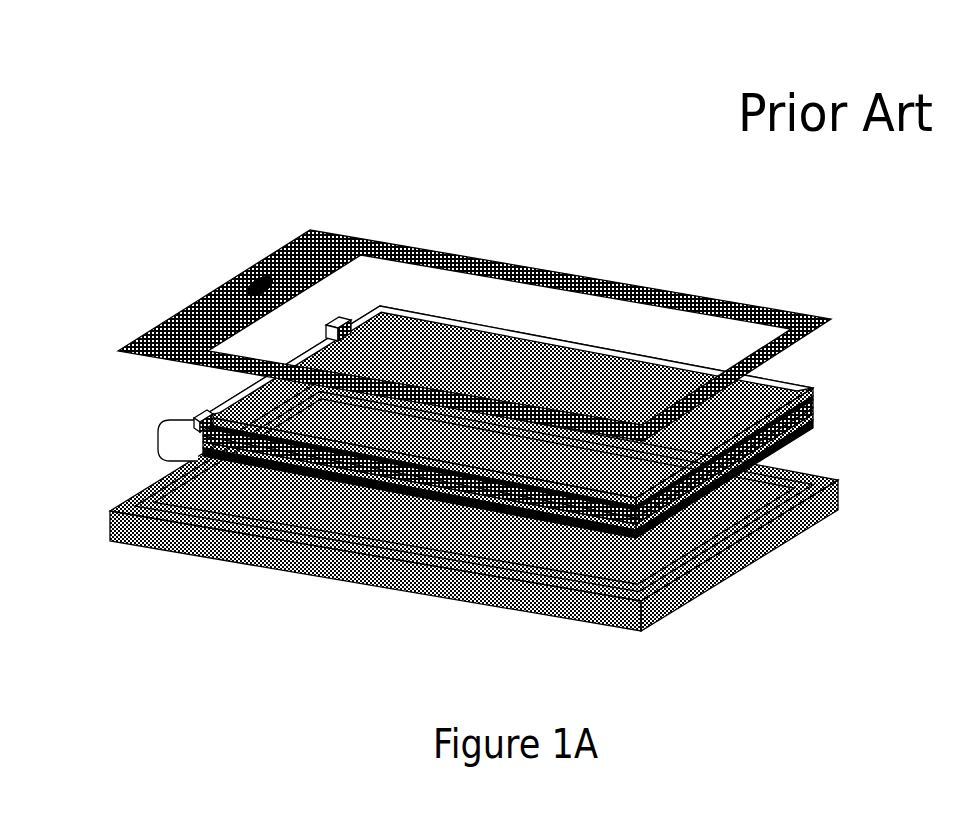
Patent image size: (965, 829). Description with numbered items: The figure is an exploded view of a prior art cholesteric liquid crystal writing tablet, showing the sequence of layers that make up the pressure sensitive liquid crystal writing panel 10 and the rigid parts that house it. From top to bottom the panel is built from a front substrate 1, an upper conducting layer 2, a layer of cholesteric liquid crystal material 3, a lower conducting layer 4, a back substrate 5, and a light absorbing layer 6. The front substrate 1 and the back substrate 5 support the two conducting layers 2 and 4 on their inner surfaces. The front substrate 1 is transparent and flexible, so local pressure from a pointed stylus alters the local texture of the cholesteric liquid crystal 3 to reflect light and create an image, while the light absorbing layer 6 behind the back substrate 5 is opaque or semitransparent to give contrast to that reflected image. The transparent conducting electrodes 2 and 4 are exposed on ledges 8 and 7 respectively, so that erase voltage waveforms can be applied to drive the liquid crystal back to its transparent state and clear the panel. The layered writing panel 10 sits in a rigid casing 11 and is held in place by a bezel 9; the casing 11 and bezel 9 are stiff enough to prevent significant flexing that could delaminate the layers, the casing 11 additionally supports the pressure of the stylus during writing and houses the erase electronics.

The front substrate 1 is at (792, 380).
The upper conducting layer 2 is at (807, 390).
The layer of cholesteric liquid crystal material 3 is at (807, 398).
The lower conducting layer 4 is at (807, 406).
The back substrate 5 is at (797, 428).
The light absorbing layer 6 is at (777, 440).
The ledge 7 is at (192, 407).
The ledge 8 is at (316, 326).
The bezel 9 is at (450, 248).
The pressure sensitive liquid crystal writing panel 10 is at (144, 443).
The rigid casing 11 is at (742, 542).